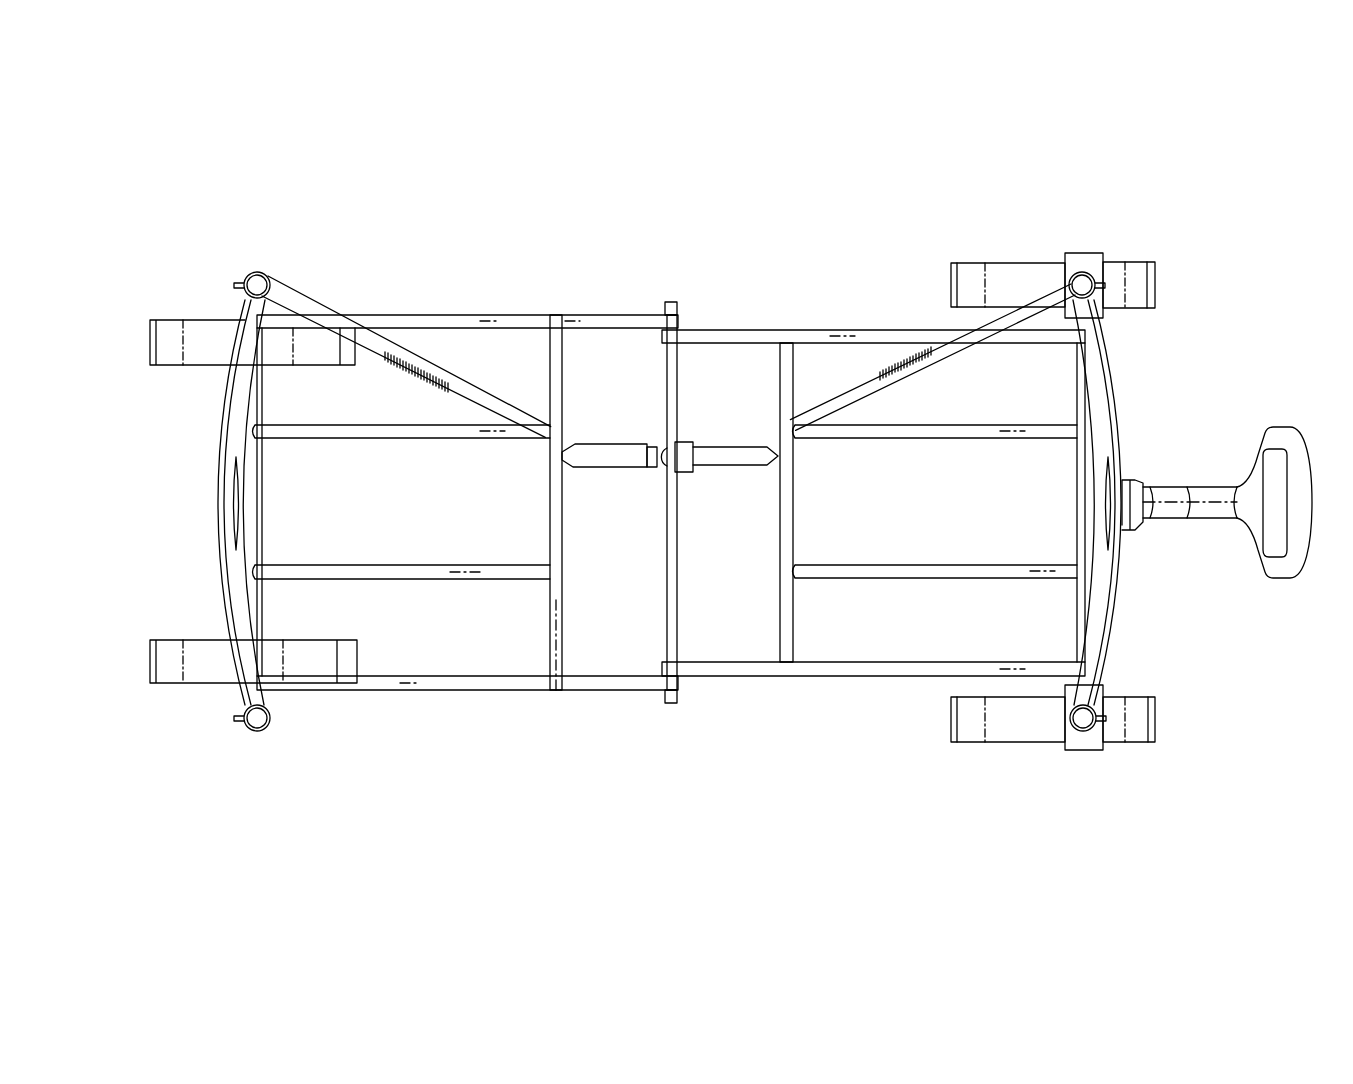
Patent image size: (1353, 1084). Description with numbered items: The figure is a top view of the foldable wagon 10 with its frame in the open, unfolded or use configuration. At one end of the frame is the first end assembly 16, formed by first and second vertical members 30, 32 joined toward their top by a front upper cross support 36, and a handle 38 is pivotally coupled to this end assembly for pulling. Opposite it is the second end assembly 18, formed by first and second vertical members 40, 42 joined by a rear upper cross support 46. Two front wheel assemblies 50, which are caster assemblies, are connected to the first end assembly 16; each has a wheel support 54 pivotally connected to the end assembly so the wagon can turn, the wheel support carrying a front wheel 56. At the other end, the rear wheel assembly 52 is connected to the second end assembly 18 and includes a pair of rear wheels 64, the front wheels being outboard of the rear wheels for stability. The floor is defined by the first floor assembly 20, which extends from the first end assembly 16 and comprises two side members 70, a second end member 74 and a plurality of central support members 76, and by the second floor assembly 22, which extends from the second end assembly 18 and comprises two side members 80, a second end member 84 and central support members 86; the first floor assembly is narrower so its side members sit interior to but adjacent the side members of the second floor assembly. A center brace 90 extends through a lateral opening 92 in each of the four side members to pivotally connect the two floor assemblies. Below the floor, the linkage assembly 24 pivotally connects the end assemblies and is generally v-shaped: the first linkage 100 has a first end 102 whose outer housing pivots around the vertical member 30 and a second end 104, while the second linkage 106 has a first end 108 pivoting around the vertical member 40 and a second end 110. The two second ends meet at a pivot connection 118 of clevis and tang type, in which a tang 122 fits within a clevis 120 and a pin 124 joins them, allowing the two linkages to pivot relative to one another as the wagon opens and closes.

The foldable wagon 10 is at (408, 798).
The first end assembly 16 is at (1150, 430).
The second end assembly 18 is at (173, 523).
The first floor assembly 20 is at (816, 295).
The second floor assembly 22 is at (367, 300).
The linkage assembly 24 is at (605, 430).
The first vertical member 30 is at (1088, 283).
The second vertical member 32 is at (1085, 725).
The front upper cross support 36 is at (1107, 628).
The handle 38 is at (1292, 455).
The first vertical member 40 is at (255, 284).
The second vertical member 42 is at (253, 727).
The rear upper cross support 46 is at (222, 443).
The front wheel assembly 50 is at (1036, 193).
The rear wheel assembly 52 is at (148, 710).
The wheel support 54 is at (1083, 253).
The front wheel 56 is at (1143, 282).
The rear wheel 64 is at (150, 338).
The side member 70 is at (900, 328).
The second end member 74 is at (796, 508).
The central support member 76 is at (1019, 425).
The side member 80 is at (460, 315).
The second end member 84 is at (560, 621).
The central support member 86 is at (418, 441).
The center brace 90 is at (677, 620).
The lateral opening 92 is at (673, 345).
The first linkage 100 is at (878, 396).
The first end 102 is at (1050, 305).
The second end 104 is at (729, 468).
The second linkage 106 is at (383, 355).
The first end 108 is at (293, 300).
The second end 110 is at (627, 450).
The pivot connection 118 is at (687, 473).
The clevis 120 is at (675, 455).
The tang 122 is at (652, 470).
The pin 124 is at (695, 453).